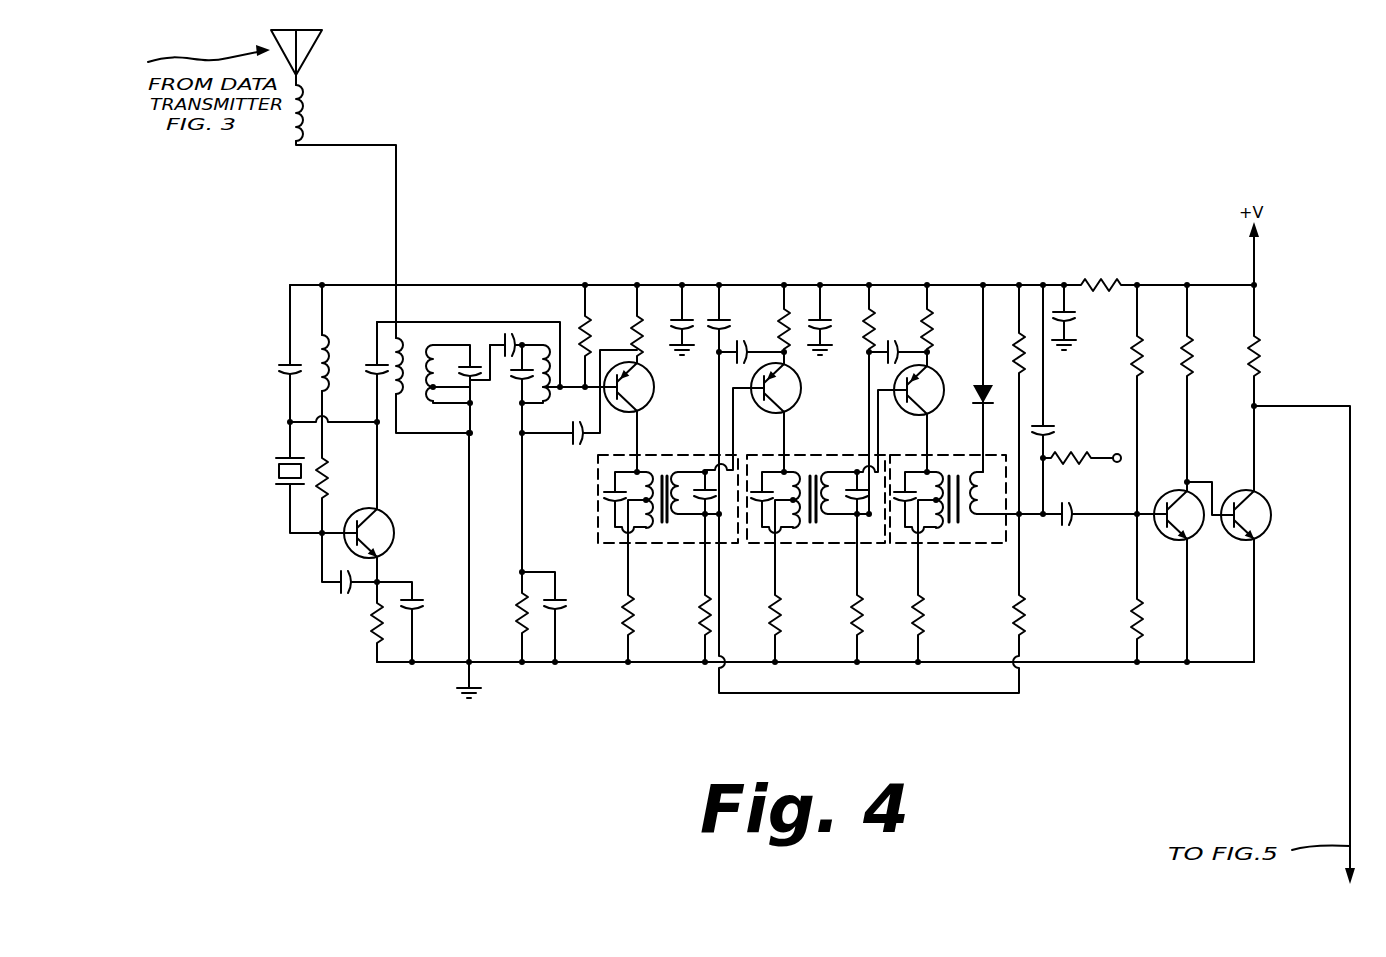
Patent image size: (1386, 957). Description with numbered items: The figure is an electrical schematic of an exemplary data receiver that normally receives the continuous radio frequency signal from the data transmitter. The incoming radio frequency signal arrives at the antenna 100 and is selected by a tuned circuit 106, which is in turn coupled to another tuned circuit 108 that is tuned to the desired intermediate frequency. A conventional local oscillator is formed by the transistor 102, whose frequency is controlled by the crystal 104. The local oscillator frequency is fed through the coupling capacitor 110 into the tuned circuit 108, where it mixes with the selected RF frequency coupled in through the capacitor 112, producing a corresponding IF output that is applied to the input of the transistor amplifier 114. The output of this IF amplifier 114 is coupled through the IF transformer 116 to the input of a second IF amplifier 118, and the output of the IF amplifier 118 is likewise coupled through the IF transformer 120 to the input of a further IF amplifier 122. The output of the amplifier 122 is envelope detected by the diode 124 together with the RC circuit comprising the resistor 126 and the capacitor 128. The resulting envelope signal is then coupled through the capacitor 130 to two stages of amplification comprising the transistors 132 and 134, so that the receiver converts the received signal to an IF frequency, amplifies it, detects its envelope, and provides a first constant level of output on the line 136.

The antenna 100 is at (318, 50).
The transistor 102 is at (392, 518).
The crystal 104 is at (270, 456).
The tuned circuit 106 is at (460, 335).
The tuned circuit 108 is at (556, 352).
The coupling capacitor 110 is at (358, 377).
The capacitor 112 is at (508, 359).
The transistor amplifier 114 is at (648, 405).
The IF transformer 116 is at (642, 543).
The IF amplifier 118 is at (795, 408).
The IF transformer 120 is at (788, 543).
The IF amplifier 122 is at (941, 407).
The diode 124 is at (979, 384).
The resistor 126 is at (1022, 370).
The capacitor 128 is at (1052, 430).
The capacitor 130 is at (1067, 528).
The transistor 132 is at (1194, 540).
The transistor 134 is at (1262, 537).
The line 136 is at (1350, 740).